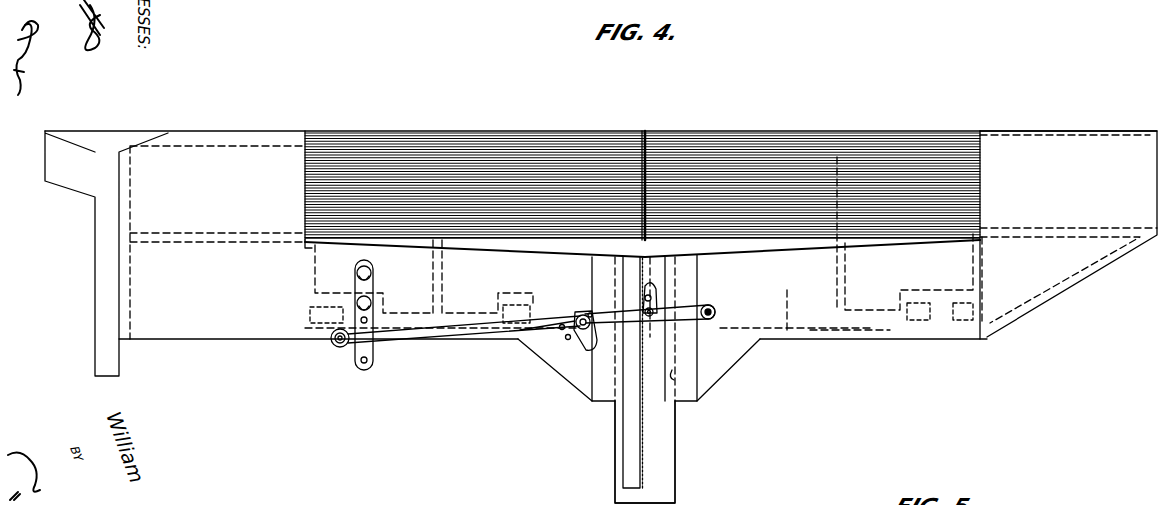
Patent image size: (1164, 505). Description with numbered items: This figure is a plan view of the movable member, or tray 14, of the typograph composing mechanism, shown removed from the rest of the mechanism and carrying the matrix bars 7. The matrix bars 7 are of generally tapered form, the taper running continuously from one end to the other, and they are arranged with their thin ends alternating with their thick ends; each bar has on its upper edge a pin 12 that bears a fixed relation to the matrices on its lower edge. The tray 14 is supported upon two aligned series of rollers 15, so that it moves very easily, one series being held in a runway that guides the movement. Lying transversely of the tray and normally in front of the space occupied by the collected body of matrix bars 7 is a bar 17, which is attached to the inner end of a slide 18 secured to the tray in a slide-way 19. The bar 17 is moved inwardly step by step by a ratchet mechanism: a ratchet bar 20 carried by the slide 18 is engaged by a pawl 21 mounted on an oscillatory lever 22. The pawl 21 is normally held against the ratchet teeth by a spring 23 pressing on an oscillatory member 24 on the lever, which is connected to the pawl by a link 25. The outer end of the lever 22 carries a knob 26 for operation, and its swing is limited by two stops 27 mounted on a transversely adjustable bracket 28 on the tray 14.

The matrix bars 7 is at (878, 165).
The pin 12 is at (648, 132).
The tray 14 is at (1034, 140).
The rollers 15 is at (530, 323).
The bar 17 is at (857, 243).
The slide 18 is at (675, 427).
The slide-way 19 is at (674, 378).
The ratchet bar 20 is at (623, 440).
The pawl 21 is at (649, 305).
The oscillatory lever 22 is at (528, 347).
The spring 23 is at (530, 337).
The oscillatory member 24 is at (580, 347).
The link 25 is at (610, 308).
The knob 26 is at (333, 344).
The stops 27 is at (363, 324).
The bracket 28 is at (373, 358).